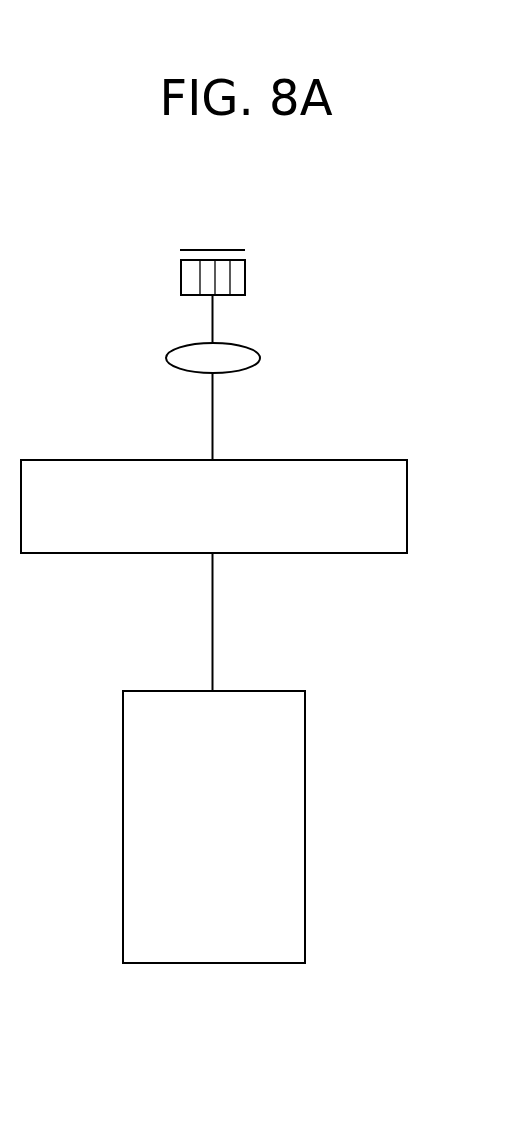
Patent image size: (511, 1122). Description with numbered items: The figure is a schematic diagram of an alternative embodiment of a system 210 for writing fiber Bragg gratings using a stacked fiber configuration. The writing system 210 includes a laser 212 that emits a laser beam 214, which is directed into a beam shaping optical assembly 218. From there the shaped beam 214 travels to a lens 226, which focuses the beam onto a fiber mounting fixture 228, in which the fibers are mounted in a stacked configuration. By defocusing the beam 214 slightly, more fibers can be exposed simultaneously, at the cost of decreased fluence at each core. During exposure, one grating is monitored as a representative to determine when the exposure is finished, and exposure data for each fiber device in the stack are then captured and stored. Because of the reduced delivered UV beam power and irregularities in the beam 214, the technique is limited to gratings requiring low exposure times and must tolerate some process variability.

The system for writing FBGs 210 is at (215, 225).
The laser 212 is at (305, 785).
The laser beam 214 is at (214, 625).
The beam shaping optical assembly 218 is at (292, 460).
The lens 226 is at (259, 352).
The fiber mounting fixture 228 is at (246, 278).